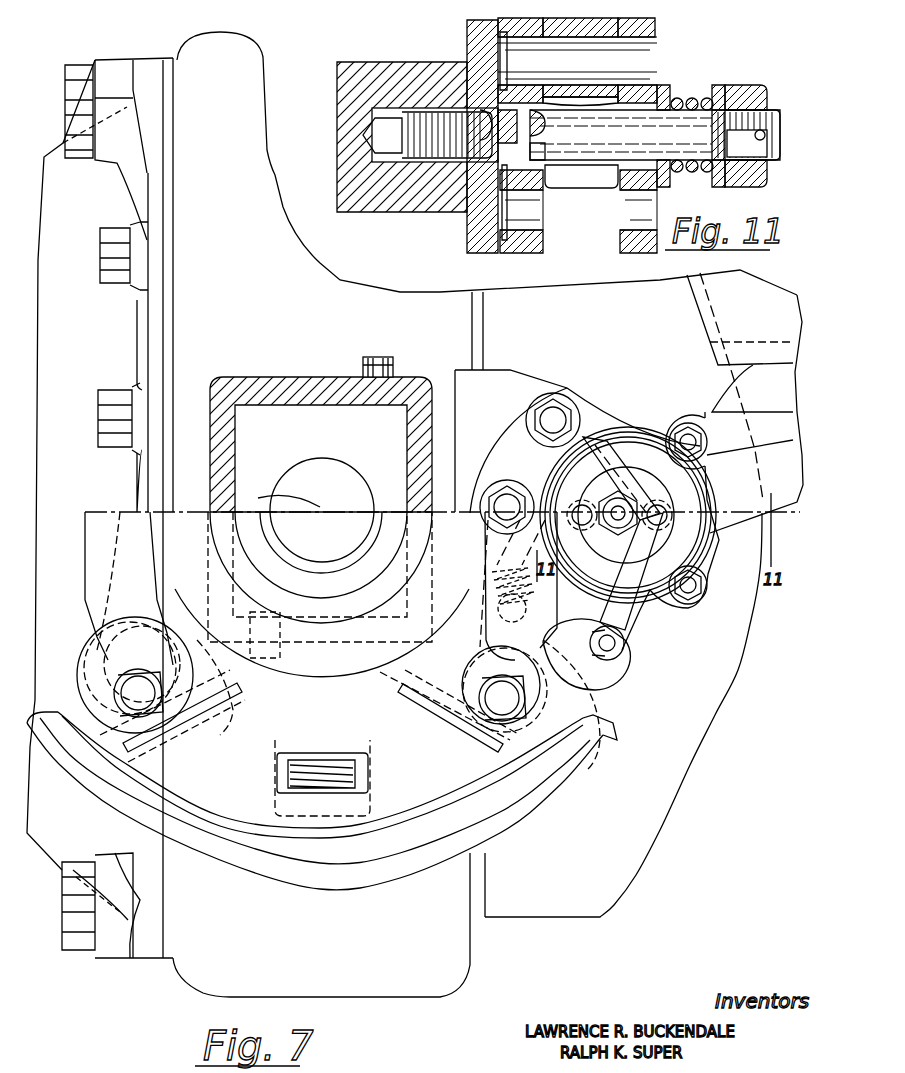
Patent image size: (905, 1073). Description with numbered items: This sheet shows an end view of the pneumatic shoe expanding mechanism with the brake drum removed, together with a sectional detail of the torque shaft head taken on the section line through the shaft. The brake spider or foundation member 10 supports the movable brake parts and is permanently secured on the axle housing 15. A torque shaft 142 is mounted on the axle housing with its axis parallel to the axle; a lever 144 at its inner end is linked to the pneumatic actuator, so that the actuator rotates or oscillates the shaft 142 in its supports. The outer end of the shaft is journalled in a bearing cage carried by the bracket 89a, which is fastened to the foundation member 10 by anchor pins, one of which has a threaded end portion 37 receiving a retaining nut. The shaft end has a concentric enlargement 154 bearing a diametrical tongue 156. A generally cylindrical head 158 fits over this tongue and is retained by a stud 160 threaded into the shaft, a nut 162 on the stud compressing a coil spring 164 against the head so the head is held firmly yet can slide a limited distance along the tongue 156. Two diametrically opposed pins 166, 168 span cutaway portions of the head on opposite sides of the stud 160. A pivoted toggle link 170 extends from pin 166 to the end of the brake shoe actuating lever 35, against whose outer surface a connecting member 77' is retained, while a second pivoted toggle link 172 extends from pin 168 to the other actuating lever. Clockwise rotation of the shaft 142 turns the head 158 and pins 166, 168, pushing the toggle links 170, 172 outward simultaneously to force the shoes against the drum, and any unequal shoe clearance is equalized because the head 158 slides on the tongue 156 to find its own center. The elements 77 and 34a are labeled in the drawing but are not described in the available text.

In FIG. 11, the torque shaft 142 is at (384, 62).
In FIG. 11, the concentric enlargement 154 is at (467, 22).
In FIG. 11, the diametrical tongue 156 is at (510, 128).
In FIG. 11, the cylindrical head 158 is at (657, 30).
In FIG. 11, the stud 160 is at (662, 110).
In FIG. 7, the stud 160 is at (625, 497).
In FIG. 11, the nut 162 is at (745, 96).
In FIG. 11, the coil spring 164 is at (690, 100).
In FIG. 11, the pin 168 is at (543, 20).
In FIG. 7, the pin 168 is at (572, 505).
In FIG. 11, the pivoted toggle link 172 is at (606, 20).
In FIG. 7, the pivoted toggle link 172 is at (588, 440).
In FIG. 7, the pivoted toggle link 170 is at (630, 630).
In FIG. 7, the pin 166 is at (660, 513).
In FIG. 7, the lever 144 is at (776, 495).
In FIG. 7, the axle housing 15 is at (305, 377).
In FIG. 7, the anchor bracket 77 is at (124, 622).
In FIG. 7, the connecting member 77' is at (494, 595).
In FIG. 7, the brake actuating lever 35 is at (350, 685).
In FIG. 7, the threaded end portion 37 is at (462, 680).
In FIG. 7, the bracket 34a is at (605, 668).
In FIG. 7, the bracket 89a is at (590, 760).
In FIG. 7, the brake spider 10 is at (540, 790).